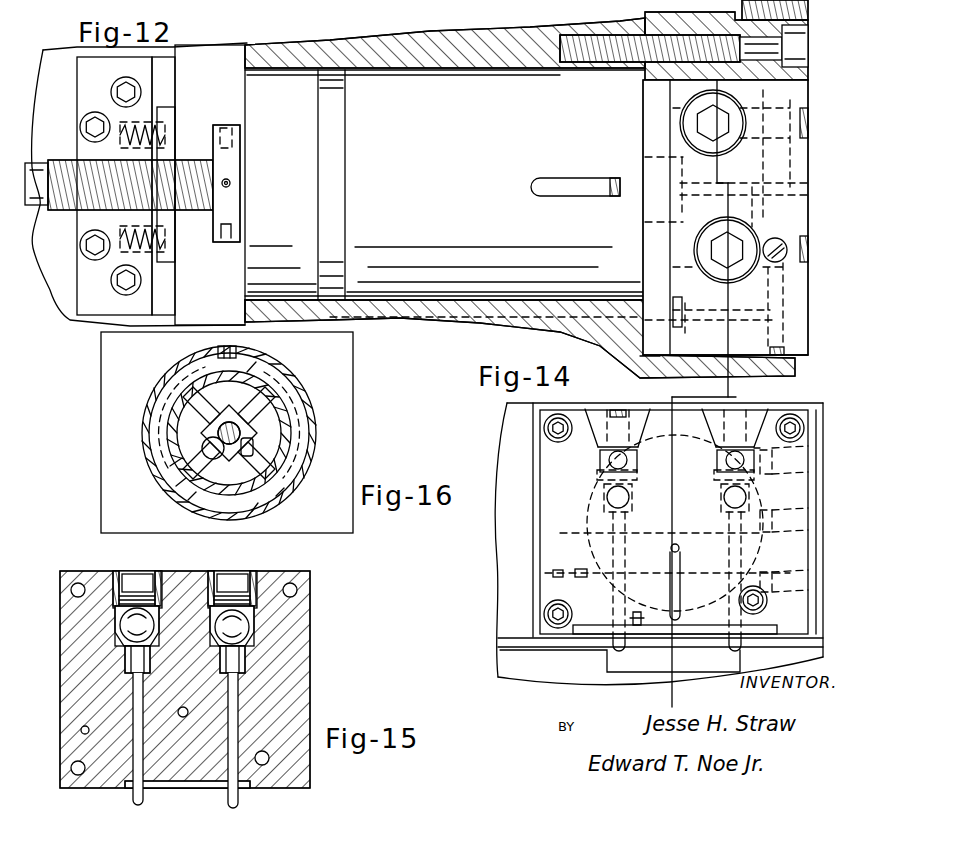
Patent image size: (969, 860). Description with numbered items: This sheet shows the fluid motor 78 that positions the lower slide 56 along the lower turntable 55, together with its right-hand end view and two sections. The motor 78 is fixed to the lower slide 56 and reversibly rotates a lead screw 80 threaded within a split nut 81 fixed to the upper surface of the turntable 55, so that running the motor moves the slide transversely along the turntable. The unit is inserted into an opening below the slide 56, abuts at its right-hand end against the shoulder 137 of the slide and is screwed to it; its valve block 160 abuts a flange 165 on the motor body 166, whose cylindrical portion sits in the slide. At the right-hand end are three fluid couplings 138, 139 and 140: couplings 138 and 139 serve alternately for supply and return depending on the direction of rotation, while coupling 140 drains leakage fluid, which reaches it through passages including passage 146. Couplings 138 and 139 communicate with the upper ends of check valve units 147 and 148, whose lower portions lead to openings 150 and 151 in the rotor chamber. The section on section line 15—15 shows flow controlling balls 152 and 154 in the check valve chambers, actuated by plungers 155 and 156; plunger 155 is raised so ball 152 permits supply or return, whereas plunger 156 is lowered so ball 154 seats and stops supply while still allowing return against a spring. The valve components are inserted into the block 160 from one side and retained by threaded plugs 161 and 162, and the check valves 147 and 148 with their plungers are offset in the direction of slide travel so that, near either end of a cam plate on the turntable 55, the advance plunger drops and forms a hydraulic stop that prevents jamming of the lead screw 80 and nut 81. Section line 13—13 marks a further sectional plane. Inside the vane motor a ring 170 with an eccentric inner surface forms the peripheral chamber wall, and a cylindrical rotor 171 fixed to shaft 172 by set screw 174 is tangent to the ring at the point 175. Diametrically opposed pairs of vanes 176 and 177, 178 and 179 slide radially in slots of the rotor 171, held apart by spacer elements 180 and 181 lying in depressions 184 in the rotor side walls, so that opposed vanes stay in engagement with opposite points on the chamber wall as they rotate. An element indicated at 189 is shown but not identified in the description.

In FIG. 12, the lower slide 56 is at (405, 45).
In FIG. 15, the lower slide 56 is at (261, 671).
In FIG. 14, the lower slide 56 is at (505, 556).
In FIG. 12, the split nut 81 is at (182, 89).
In FIG. 12, the lead screw 80 is at (190, 158).
In FIG. 12, the fluid motor 78 is at (436, 187).
In FIG. 12, the check valve unit 147 is at (748, 100).
In FIG. 15, the check valve unit 147 is at (272, 618).
In FIG. 14, the check valve unit 147 is at (706, 466).
In FIG. 12, the check valve unit 148 is at (706, 283).
In FIG. 15, the check valve unit 148 is at (107, 612).
In FIG. 14, the check valve unit 148 is at (588, 461).
In FIG. 12, the flange 165 is at (655, 241).
In FIG. 12, the valve block 160 is at (722, 346).
In FIG. 14, the valve block 160 is at (564, 519).
In FIG. 12, the passage 146 is at (452, 326).
In FIG. 12, the shoulder 137 is at (636, 358).
In FIG. 12, the section line 15— 15 is at (728, 387).
In FIG. 12, the section line 13— 13 is at (721, 398).
In FIG. 14, the section line 13— 13 is at (672, 707).
In FIG. 16, the key 189 is at (214, 350).
In FIG. 16, the point of tangency 175 is at (205, 384).
In FIG. 16, the vane 176 is at (196, 412).
In FIG. 16, the opening 150 is at (178, 431).
In FIG. 16, the shaft 172 is at (172, 463).
In FIG. 16, the vane 179 is at (180, 483).
In FIG. 16, the set screw 174 is at (192, 497).
In FIG. 16, the spacer element 180 is at (250, 368).
In FIG. 16, the ring 170 is at (262, 374).
In FIG. 16, the motor body 166 is at (300, 382).
In FIG. 16, the vane 178 is at (276, 402).
In FIG. 16, the opening 151 is at (307, 422).
In FIG. 16, the depression 184 is at (300, 437).
In FIG. 16, the cylindrical rotor 171 is at (300, 452).
In FIG. 16, the vane 177 is at (280, 492).
In FIG. 16, the spacer element 181 is at (255, 508).
In FIG. 15, the threaded plug 161 is at (161, 574).
In FIG. 15, the threaded plug 162 is at (259, 574).
In FIG. 15, the flow controlling ball 152 is at (120, 630).
In FIG. 15, the flow controlling ball 154 is at (250, 636).
In FIG. 15, the plunger 155 is at (133, 710).
In FIG. 15, the plunger 156 is at (240, 722).
In FIG. 14, the fluid coupling 138 is at (757, 488).
In FIG. 14, the fluid coupling 139 is at (784, 535).
In FIG. 14, the fluid coupling 140 is at (783, 600).
In FIG. 14, the lower turntable 55 is at (524, 664).